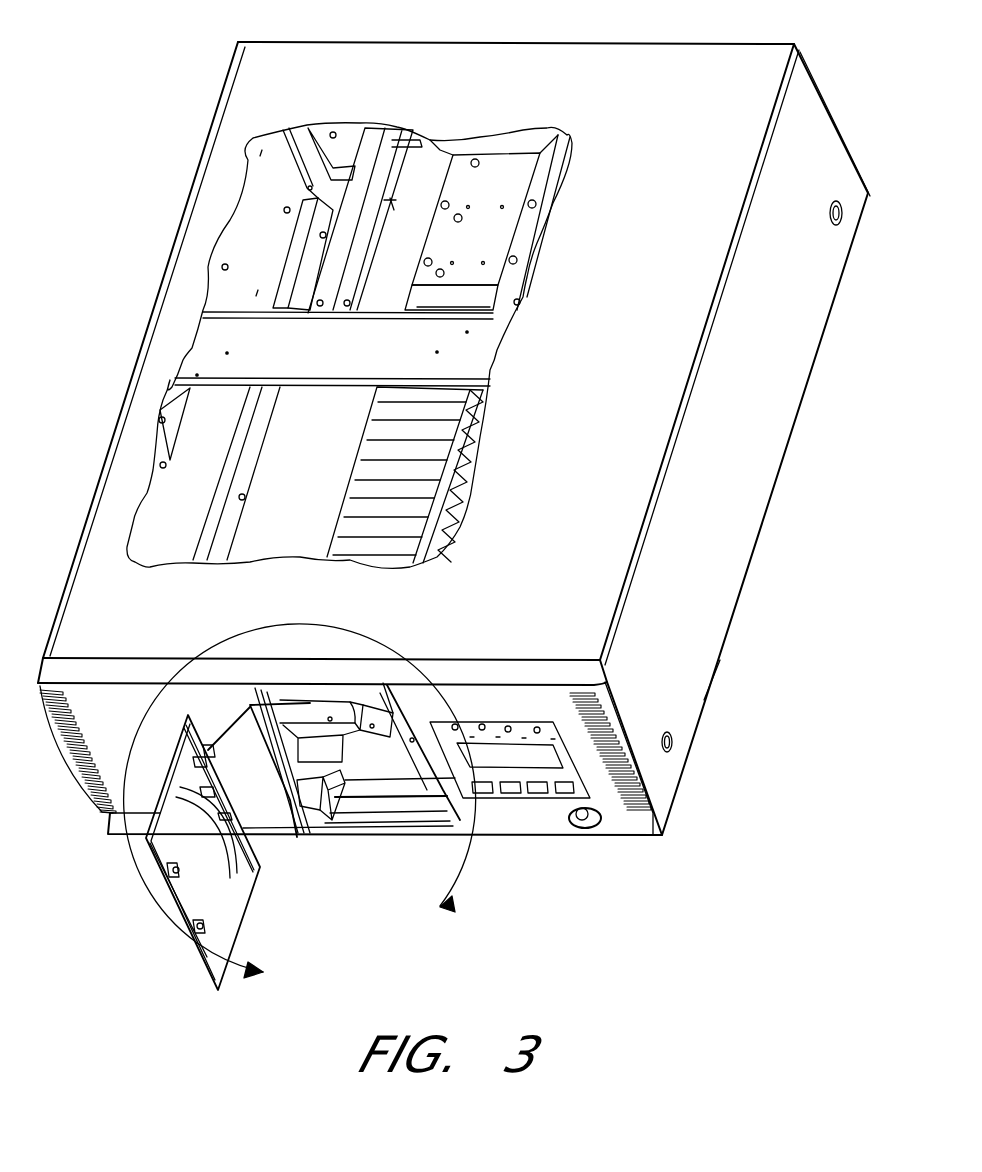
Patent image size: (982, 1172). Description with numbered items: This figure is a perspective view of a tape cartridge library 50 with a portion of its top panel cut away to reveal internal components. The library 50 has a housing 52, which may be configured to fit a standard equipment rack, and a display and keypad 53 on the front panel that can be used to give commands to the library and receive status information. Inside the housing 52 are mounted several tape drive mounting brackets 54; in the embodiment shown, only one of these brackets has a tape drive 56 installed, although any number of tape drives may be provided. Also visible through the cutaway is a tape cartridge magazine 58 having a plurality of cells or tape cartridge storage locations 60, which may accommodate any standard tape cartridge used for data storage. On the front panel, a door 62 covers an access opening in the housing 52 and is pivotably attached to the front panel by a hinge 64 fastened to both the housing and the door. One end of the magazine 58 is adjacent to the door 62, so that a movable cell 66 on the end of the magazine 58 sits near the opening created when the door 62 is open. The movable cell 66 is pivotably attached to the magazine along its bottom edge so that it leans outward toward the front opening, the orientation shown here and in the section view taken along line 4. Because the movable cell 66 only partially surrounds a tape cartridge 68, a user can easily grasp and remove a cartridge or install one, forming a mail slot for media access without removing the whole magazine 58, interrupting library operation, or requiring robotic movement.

The tape cartridge library 50 is at (160, 185).
The housing 52 is at (716, 525).
The display and keypad 53 is at (527, 757).
The tape drive mounting brackets 54 is at (506, 193).
The tape drive 56 is at (407, 270).
The tape cartridge magazine 58 is at (332, 502).
The cells or tape cartridge storage locations 60 is at (397, 488).
The door 62 is at (207, 887).
The hinge 64 is at (228, 762).
The movable cell 66 is at (375, 722).
The tape cartridge 68 is at (275, 780).
The section line 4- 4 is at (300, 816).